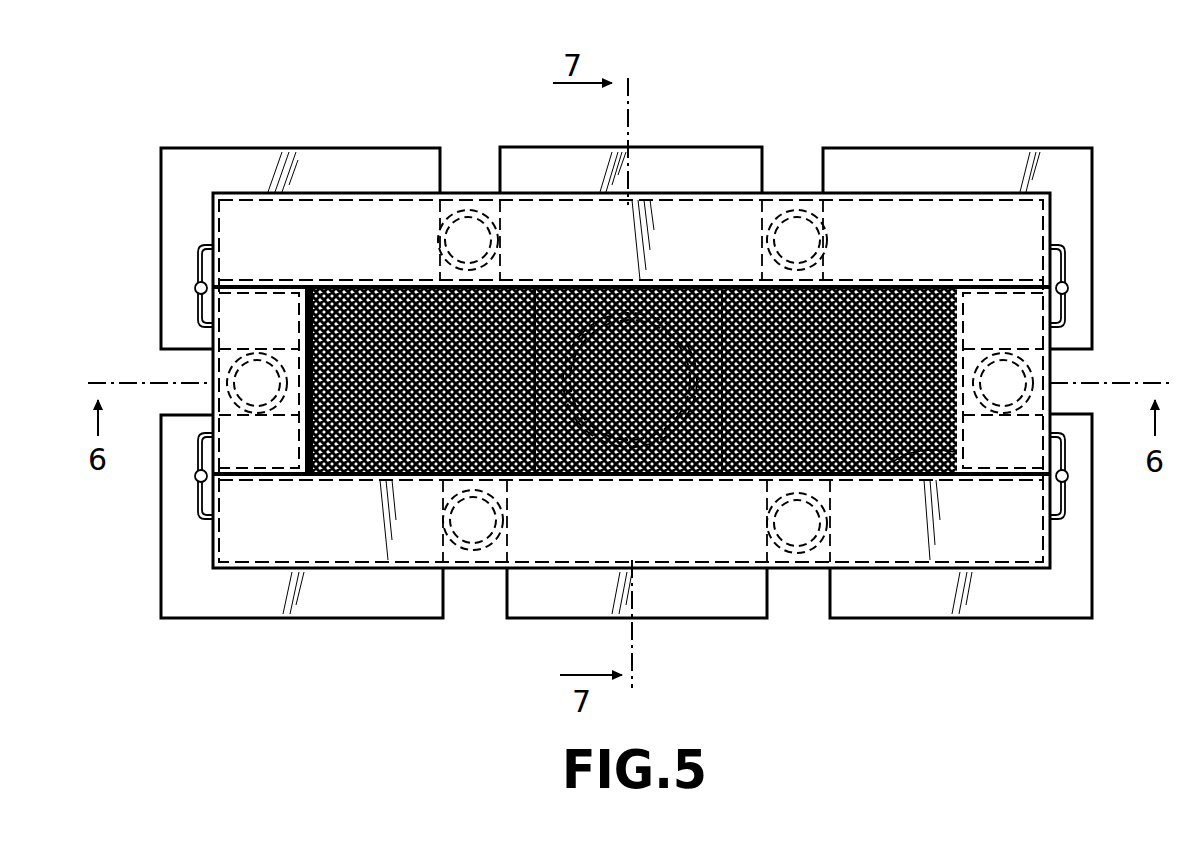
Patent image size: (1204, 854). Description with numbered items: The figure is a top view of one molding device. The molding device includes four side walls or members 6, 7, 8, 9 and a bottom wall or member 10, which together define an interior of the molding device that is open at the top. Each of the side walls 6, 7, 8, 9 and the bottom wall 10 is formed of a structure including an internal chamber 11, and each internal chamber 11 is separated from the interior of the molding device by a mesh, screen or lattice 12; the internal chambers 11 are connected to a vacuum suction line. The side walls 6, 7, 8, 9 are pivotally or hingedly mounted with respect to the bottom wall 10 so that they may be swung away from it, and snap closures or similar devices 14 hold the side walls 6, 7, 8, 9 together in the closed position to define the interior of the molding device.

The side wall 6 is at (870, 215).
The side wall 7 is at (1025, 336).
The side wall 8 is at (690, 540).
The side wall 9 is at (233, 334).
The bottom wall 10 is at (482, 397).
The internal chamber 11 is at (942, 240).
The mesh 12 is at (893, 462).
The snap closure 14 is at (195, 289).